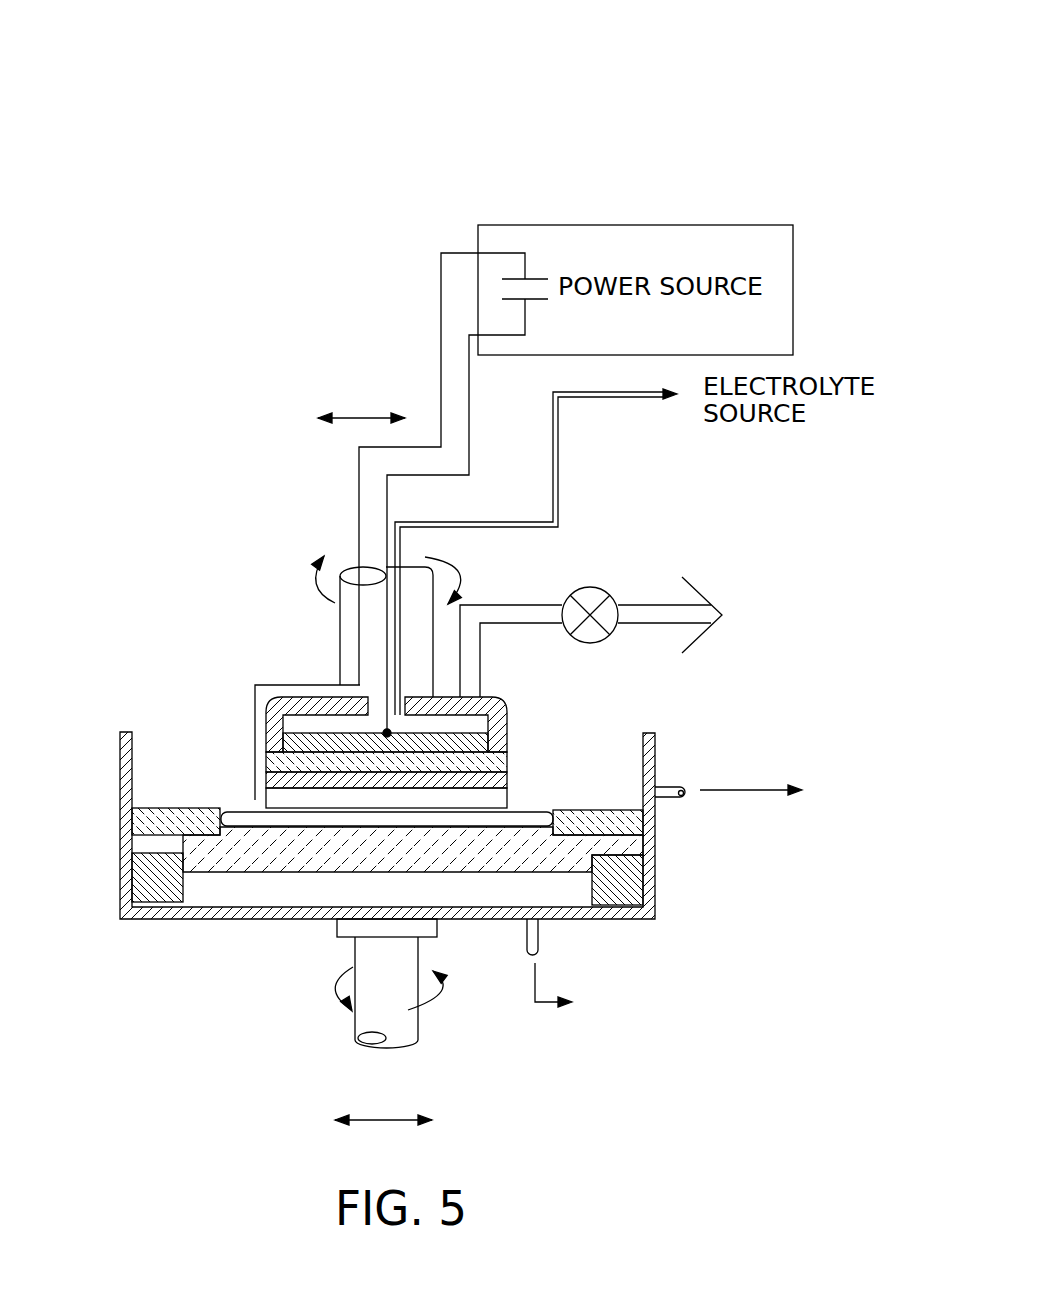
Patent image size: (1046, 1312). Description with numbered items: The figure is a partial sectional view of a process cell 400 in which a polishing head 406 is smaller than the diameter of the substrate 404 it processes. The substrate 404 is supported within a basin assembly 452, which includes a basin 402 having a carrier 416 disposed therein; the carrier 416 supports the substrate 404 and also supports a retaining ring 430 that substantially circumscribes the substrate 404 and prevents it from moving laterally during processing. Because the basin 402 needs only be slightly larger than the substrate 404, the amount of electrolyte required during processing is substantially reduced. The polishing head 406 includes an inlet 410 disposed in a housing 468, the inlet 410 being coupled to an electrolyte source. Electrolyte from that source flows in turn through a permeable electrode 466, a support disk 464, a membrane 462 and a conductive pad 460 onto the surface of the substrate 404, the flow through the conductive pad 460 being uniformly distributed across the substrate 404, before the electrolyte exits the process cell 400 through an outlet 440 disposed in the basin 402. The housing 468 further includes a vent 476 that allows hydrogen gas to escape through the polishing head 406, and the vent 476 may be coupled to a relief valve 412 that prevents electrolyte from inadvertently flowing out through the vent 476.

The process cell 400 is at (838, 100).
The basin 402 is at (664, 890).
The substrate 404 is at (538, 810).
The polishing head 406 is at (262, 610).
The inlet 410 is at (388, 693).
The relief valve 412 is at (585, 587).
The carrier 416 is at (270, 845).
The retaining ring 430 is at (162, 813).
The outlet 440 is at (664, 785).
The basin assembly 452 is at (752, 878).
The conductive pad 460 is at (302, 792).
The membrane 462 is at (305, 750).
The support disk 464 is at (497, 760).
The permeable electrode 466 is at (302, 742).
The housing 468 is at (497, 700).
The vent 476 is at (476, 604).